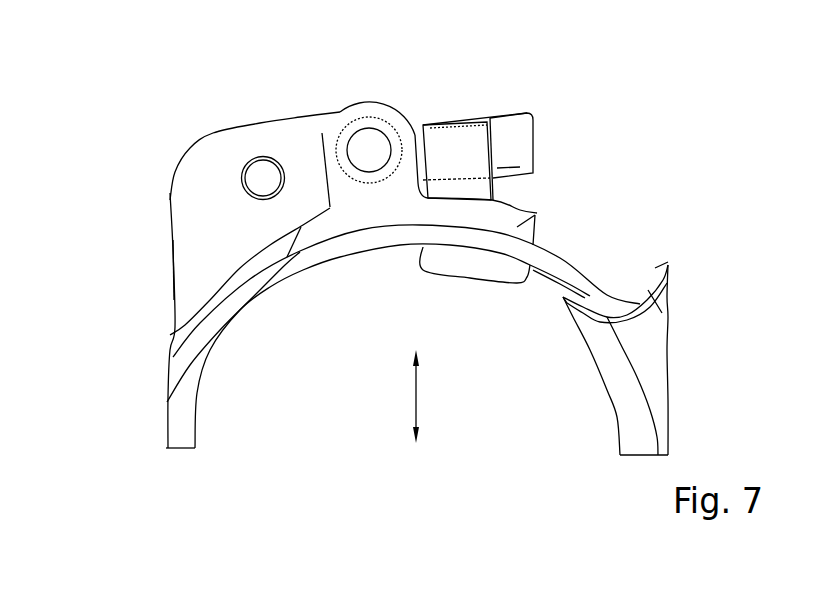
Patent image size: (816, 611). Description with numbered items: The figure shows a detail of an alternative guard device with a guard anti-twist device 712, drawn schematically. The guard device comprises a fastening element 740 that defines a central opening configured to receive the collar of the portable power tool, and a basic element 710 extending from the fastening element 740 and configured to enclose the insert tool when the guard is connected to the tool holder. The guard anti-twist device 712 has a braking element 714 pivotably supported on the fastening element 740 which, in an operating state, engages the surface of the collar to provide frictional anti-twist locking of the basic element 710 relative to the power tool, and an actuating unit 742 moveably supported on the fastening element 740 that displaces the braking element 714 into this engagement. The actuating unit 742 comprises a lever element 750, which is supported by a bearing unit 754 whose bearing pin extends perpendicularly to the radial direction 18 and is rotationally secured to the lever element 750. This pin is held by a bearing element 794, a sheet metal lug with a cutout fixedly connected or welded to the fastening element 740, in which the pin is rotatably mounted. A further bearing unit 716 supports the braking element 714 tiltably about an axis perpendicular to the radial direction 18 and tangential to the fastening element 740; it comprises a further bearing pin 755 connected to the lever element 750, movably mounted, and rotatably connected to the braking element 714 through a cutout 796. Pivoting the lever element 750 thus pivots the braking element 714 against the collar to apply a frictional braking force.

The radial direction 18 is at (418, 397).
The basic element 710 is at (664, 263).
The guard anti-twist device 712 is at (548, 95).
The braking element 714 is at (537, 213).
The further bearing unit 716 is at (460, 133).
The fastening element 740 is at (187, 397).
The actuating unit 742 is at (158, 190).
The lever element 750 is at (188, 258).
The bearing unit 754 is at (346, 108).
The further bearing pin 755 is at (263, 180).
The bearing element 794 is at (387, 114).
The cutout 796 is at (421, 125).